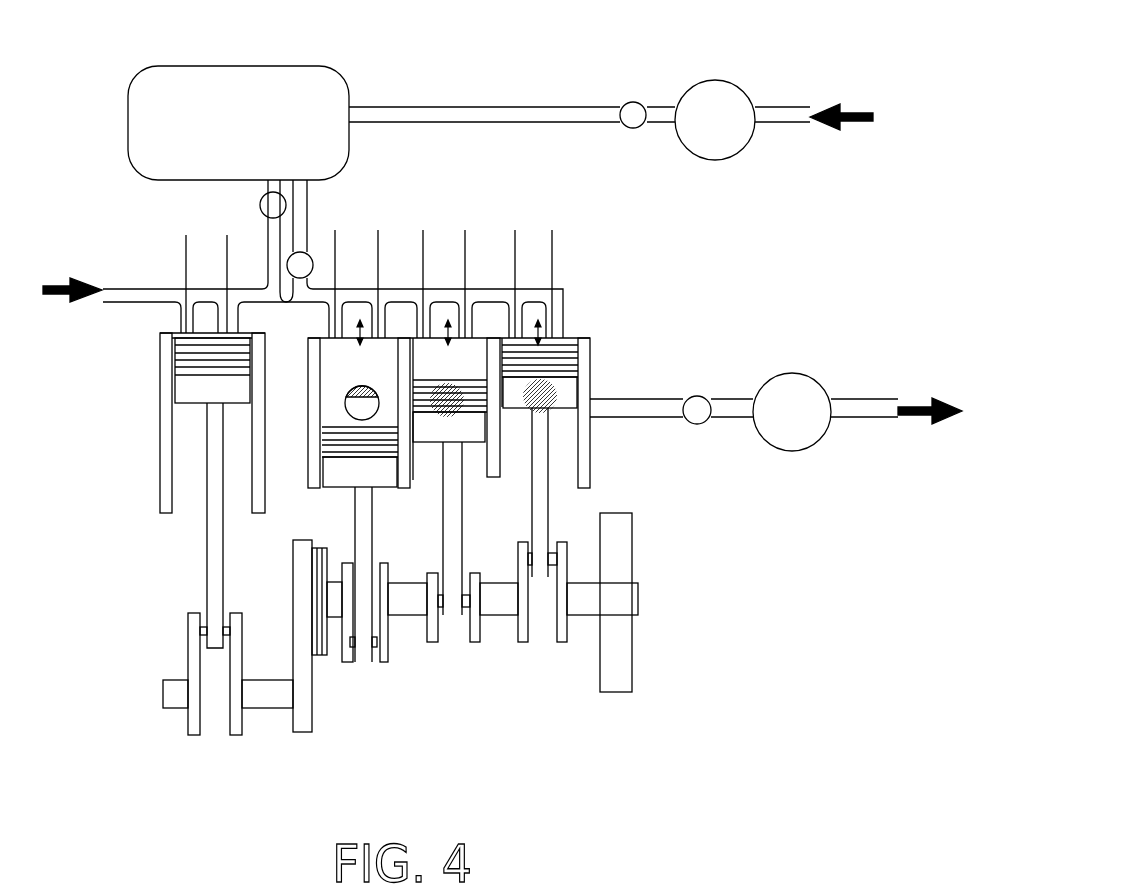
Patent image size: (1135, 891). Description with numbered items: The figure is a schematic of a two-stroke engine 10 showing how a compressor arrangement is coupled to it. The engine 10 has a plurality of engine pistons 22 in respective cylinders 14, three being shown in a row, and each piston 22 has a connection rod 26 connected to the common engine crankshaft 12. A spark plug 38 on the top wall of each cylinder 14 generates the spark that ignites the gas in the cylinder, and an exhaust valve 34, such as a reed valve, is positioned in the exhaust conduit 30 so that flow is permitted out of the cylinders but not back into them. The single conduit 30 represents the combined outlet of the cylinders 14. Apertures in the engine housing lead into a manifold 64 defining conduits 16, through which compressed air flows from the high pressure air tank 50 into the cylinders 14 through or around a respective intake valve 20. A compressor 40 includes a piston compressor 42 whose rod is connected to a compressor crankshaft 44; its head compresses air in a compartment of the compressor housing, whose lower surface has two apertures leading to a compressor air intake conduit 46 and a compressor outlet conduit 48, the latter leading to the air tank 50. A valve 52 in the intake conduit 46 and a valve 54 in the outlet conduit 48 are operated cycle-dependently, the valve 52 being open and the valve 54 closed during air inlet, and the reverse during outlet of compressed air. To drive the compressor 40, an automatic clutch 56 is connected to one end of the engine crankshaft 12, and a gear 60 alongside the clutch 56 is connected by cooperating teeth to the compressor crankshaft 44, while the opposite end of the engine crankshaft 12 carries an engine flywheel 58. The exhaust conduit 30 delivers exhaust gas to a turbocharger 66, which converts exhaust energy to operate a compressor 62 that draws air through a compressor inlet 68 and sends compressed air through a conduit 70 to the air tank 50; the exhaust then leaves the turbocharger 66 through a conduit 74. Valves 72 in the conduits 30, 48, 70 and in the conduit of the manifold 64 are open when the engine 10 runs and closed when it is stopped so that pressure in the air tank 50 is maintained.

The two-stroke engine 10 is at (497, 557).
The engine crankshaft 12 is at (412, 615).
The cylinder 14 is at (307, 468).
The conduits 16 is at (558, 312).
The intake valve 20 is at (557, 237).
The engine piston 22 is at (338, 487).
The connection rod 26 is at (353, 517).
The exhaust conduit 30 is at (630, 397).
The exhaust valve 34 is at (350, 388).
The spark plug 38 is at (597, 318).
The compressor 40 is at (190, 492).
The piston compressor 42 is at (205, 390).
The compressor crankshaft 44 is at (200, 708).
The compressor air intake conduit 46 is at (137, 285).
The compressor outlet conduit 48 is at (268, 275).
The high pressure air tank 50 is at (238, 123).
The valve 52 is at (185, 273).
The valve 54 is at (225, 253).
The automatic clutch 56 is at (322, 655).
The engine flywheel 58 is at (620, 693).
The gear 60 is at (293, 612).
The compressor 62 is at (713, 110).
The manifold 64 is at (307, 240).
The turbocharger 66 is at (803, 428).
The compressor inlet 68 is at (802, 108).
The conduit 70 is at (503, 105).
The valve 72 is at (627, 104).
The conduit 74 is at (860, 402).